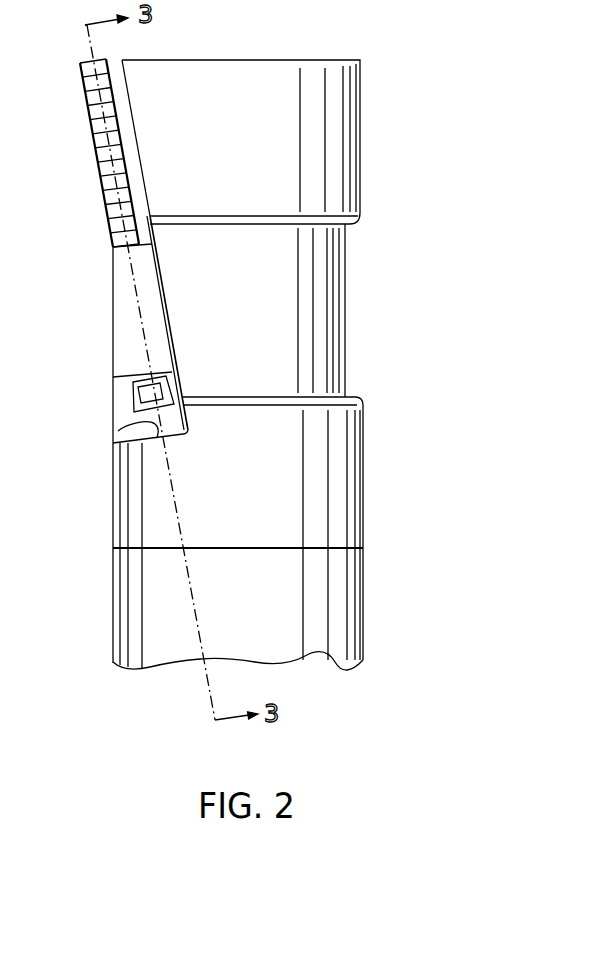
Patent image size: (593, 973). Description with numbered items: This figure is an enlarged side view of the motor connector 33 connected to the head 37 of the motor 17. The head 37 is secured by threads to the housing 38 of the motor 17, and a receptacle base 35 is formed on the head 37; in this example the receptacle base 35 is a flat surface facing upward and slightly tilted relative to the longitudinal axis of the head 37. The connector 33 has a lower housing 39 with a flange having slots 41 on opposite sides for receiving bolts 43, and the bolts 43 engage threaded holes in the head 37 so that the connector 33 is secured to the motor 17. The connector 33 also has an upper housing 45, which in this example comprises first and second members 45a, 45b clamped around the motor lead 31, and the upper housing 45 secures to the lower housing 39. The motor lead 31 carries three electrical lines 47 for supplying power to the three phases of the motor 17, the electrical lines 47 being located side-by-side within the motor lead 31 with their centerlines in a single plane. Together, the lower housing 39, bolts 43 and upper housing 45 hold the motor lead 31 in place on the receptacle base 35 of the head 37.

The motor 17 is at (287, 139).
The head 37 is at (347, 154).
The housing 38 is at (135, 611).
The motor lead 31 is at (80, 153).
The electrical lines 47 is at (98, 118).
The connector 33 is at (157, 336).
The upper housing 45 is at (168, 256).
The first member 45a is at (150, 298).
The second member 45b is at (127, 330).
The lower housing 39 is at (187, 423).
The bolts 43 is at (133, 398).
The slots 41 is at (171, 390).
The receptacle base 35 is at (113, 433).